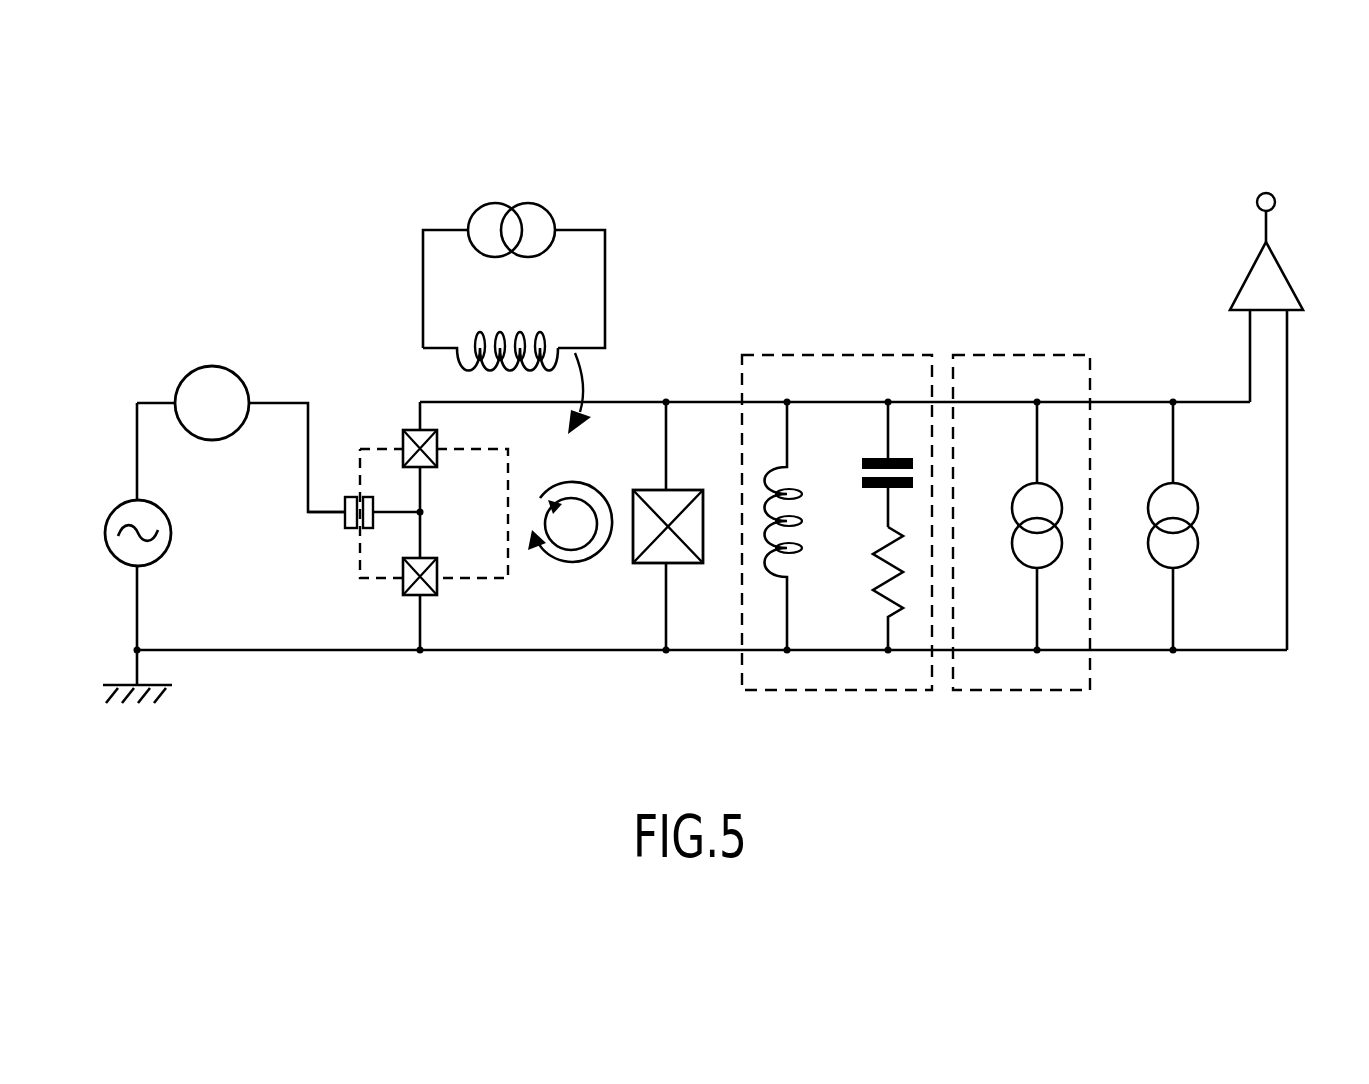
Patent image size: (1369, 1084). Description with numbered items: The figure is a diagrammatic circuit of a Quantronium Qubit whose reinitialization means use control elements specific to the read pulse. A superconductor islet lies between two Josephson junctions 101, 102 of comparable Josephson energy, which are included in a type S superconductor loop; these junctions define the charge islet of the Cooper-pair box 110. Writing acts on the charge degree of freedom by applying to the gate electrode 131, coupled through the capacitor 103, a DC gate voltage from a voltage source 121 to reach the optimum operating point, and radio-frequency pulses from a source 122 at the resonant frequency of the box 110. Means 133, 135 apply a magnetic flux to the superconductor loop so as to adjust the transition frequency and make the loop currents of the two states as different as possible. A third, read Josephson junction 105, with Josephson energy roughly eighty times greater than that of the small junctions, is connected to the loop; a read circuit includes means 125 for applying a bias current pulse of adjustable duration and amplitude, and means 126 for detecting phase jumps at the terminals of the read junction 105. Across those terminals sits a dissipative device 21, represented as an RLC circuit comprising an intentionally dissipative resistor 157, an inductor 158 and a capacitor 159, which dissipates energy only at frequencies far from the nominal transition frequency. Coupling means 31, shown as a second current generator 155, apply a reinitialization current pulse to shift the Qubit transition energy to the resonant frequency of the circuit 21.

The voltage source 121 is at (199, 366).
The source 122 is at (172, 527).
The gate electrode 131 is at (349, 495).
The capacitor 103 is at (328, 542).
The Josephson junction 101 is at (404, 430).
The Josephson junction 102 is at (404, 594).
The Cooper-pair box 110 is at (508, 580).
The means for applying a magnetic flux 135 is at (515, 203).
The means for applying a magnetic flux 133 is at (546, 345).
The read Josephson junction 105 is at (680, 565).
The dissipative device 21 is at (836, 694).
The inductor 158 is at (795, 490).
The capacitor 159 is at (876, 490).
The resistor 157 is at (874, 570).
The coupling means 31 is at (1020, 694).
The second current generator 155 is at (1013, 513).
The means for applying a current pulse 125 is at (1150, 513).
The means for detecting phase jumps 126 is at (1250, 272).